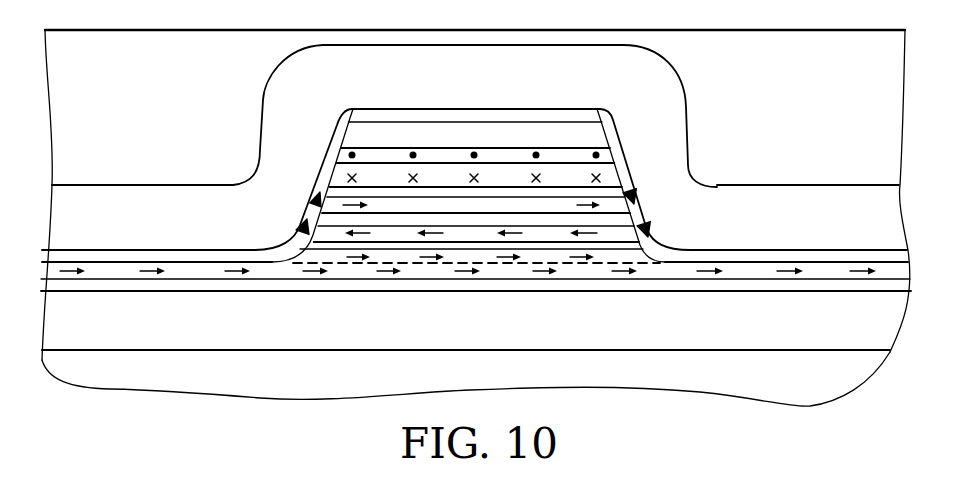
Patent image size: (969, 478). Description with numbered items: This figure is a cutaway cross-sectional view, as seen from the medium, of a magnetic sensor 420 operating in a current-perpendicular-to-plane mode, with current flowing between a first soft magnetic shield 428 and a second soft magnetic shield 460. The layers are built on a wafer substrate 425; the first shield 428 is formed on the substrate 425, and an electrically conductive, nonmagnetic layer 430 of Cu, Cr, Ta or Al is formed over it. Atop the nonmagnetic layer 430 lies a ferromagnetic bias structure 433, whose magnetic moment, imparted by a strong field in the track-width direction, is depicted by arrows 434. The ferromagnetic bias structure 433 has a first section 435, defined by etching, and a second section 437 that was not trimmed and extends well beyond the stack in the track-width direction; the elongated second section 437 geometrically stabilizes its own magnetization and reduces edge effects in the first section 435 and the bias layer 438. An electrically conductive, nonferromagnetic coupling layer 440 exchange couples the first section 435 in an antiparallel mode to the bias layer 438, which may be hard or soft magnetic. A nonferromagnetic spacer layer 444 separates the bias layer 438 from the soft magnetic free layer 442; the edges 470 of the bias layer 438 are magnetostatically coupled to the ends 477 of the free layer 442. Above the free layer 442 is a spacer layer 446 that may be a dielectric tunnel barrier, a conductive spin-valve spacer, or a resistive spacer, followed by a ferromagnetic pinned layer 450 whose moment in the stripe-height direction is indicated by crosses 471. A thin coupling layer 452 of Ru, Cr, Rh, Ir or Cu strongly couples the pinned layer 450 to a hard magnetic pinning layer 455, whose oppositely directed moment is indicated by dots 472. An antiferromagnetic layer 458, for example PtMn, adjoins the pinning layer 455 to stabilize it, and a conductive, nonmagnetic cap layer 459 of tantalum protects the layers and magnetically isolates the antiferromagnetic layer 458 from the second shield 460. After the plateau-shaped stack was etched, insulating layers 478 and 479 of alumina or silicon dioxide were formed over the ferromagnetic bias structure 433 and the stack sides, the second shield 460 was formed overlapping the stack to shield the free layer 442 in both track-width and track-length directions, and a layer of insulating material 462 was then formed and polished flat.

The magnetic sensor 420 is at (247, 103).
The insulating material layer 462 is at (106, 118).
The second soft magnetic shield 460 is at (172, 225).
The insulating layer 478 is at (190, 249).
The insulating layer 479 is at (823, 250).
The edges of bias layer 470 is at (300, 228).
The ends of free layer 477 is at (312, 200).
The second section 437 is at (103, 262).
The cap layer 459 is at (470, 109).
The antiferromagnetic layer 458 is at (417, 120).
The coupling layer 452 is at (366, 128).
The pinning layer 455 is at (523, 148).
The dots 472 is at (347, 152).
The pinned layer 450 is at (565, 165).
The crosses 471 is at (605, 180).
The spacer layer 446 is at (335, 192).
The spacer layer 444 is at (635, 217).
The free layer 442 is at (472, 215).
The bias layer 438 is at (552, 242).
The coupling layer 440 is at (403, 250).
The first section 435 is at (359, 265).
The ferromagnetic bias structure 433 is at (543, 280).
The arrows 434 is at (148, 280).
The nonmagnetic layer 430 is at (238, 292).
The first soft magnetic shield 428 is at (774, 333).
The wafer substrate 425 is at (494, 385).